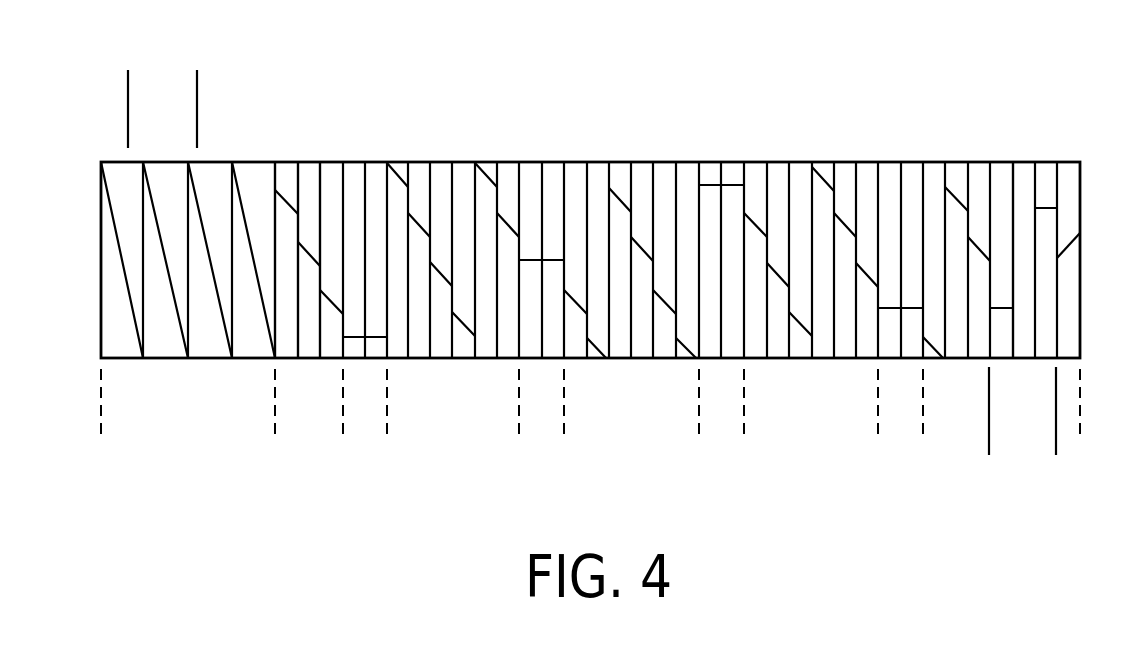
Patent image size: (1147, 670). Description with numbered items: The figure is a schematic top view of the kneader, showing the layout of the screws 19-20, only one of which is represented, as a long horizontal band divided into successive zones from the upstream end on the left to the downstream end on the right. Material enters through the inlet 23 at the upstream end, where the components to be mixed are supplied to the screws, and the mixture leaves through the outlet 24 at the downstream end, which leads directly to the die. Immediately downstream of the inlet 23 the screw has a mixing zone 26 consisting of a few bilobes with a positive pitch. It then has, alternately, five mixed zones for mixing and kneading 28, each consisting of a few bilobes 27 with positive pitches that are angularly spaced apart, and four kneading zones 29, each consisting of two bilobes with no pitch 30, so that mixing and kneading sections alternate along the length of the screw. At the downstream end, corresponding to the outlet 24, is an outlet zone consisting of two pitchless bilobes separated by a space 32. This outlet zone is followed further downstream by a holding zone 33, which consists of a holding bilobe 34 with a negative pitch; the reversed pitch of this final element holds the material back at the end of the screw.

The screws 19-20 is at (526, 142).
The inlet 23 is at (163, 82).
The outlet 24 is at (1018, 430).
The mixing zone 26 is at (101, 407).
The bilobes 27 is at (330, 160).
The mixed zones for mixing and kneading 28 is at (878, 407).
The kneading zones 29 is at (700, 315).
The bilobes with no pitch 30 is at (708, 160).
The space 32 is at (1017, 160).
The holding zone 33 is at (1070, 425).
The holding bilobe 34 is at (1060, 160).